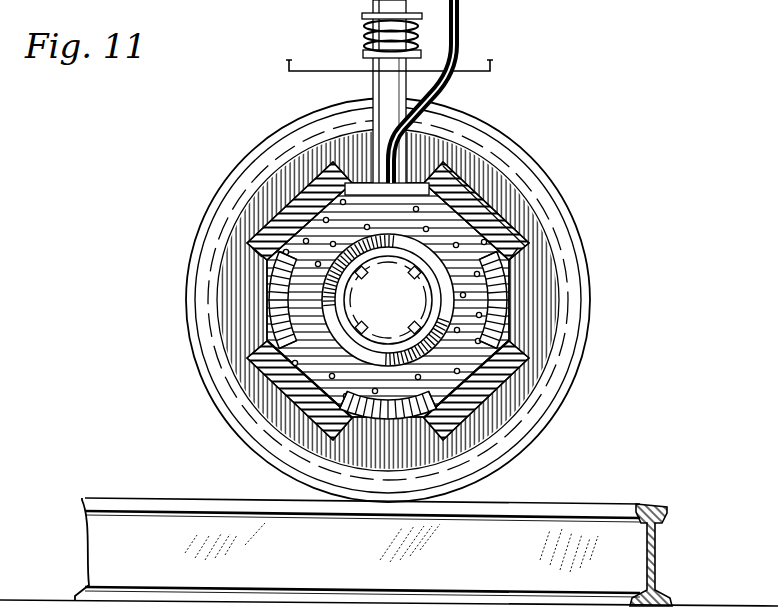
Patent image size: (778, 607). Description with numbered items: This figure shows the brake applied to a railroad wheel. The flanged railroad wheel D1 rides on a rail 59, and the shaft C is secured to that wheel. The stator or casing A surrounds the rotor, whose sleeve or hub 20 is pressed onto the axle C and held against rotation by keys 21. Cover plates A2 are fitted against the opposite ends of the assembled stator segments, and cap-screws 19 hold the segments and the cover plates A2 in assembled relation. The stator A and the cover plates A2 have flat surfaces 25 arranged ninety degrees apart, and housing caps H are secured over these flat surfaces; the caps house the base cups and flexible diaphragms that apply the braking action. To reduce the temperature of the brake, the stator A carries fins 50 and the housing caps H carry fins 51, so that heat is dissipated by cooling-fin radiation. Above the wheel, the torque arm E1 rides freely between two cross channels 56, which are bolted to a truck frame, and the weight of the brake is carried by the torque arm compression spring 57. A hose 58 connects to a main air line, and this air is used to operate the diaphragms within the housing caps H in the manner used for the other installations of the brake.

The railroad wheel D1 is at (593, 262).
The stator A is at (510, 316).
The housing cap H is at (525, 194).
The fins 51 is at (521, 217).
The flat surfaces 25 is at (512, 262).
The fins 50 is at (278, 278).
The cover plates A2 is at (506, 326).
The cap-screws 19 is at (385, 412).
The shaft C is at (395, 313).
The keys 21 is at (407, 277).
The sleeve or hub 20 is at (386, 346).
The torque arm E1 is at (372, 90).
The torque arm compression spring 57 is at (363, 36).
The cross channels 56 is at (288, 70).
The hose 58 is at (461, 38).
The rail 59 is at (563, 503).